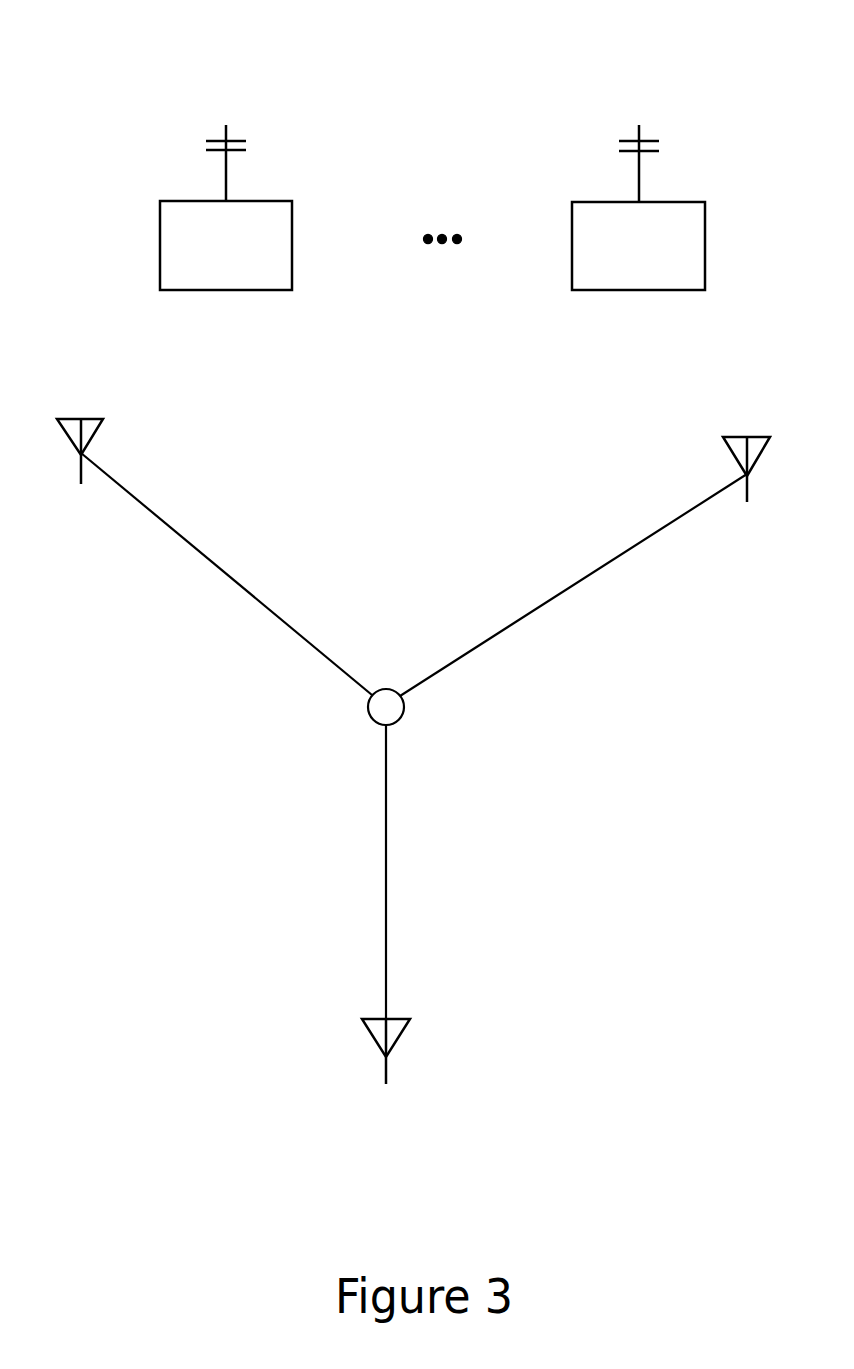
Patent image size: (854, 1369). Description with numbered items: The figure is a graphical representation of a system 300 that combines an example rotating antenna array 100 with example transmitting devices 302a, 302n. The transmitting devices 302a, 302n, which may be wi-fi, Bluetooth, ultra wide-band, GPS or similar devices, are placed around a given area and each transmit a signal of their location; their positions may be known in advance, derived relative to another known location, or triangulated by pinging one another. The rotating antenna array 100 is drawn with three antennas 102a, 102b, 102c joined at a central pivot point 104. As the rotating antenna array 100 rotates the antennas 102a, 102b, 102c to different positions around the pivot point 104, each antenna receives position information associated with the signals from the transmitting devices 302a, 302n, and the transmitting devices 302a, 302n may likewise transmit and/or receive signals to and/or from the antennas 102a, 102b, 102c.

The system 300 is at (92, 60).
The transmitting device 302a is at (226, 207).
The transmitting device 302n is at (638, 207).
The rotating antenna array 100 is at (375, 538).
The antenna 102a is at (380, 1019).
The antenna 102b is at (80, 419).
The antenna 102c is at (747, 437).
The pivot point 104 is at (386, 689).